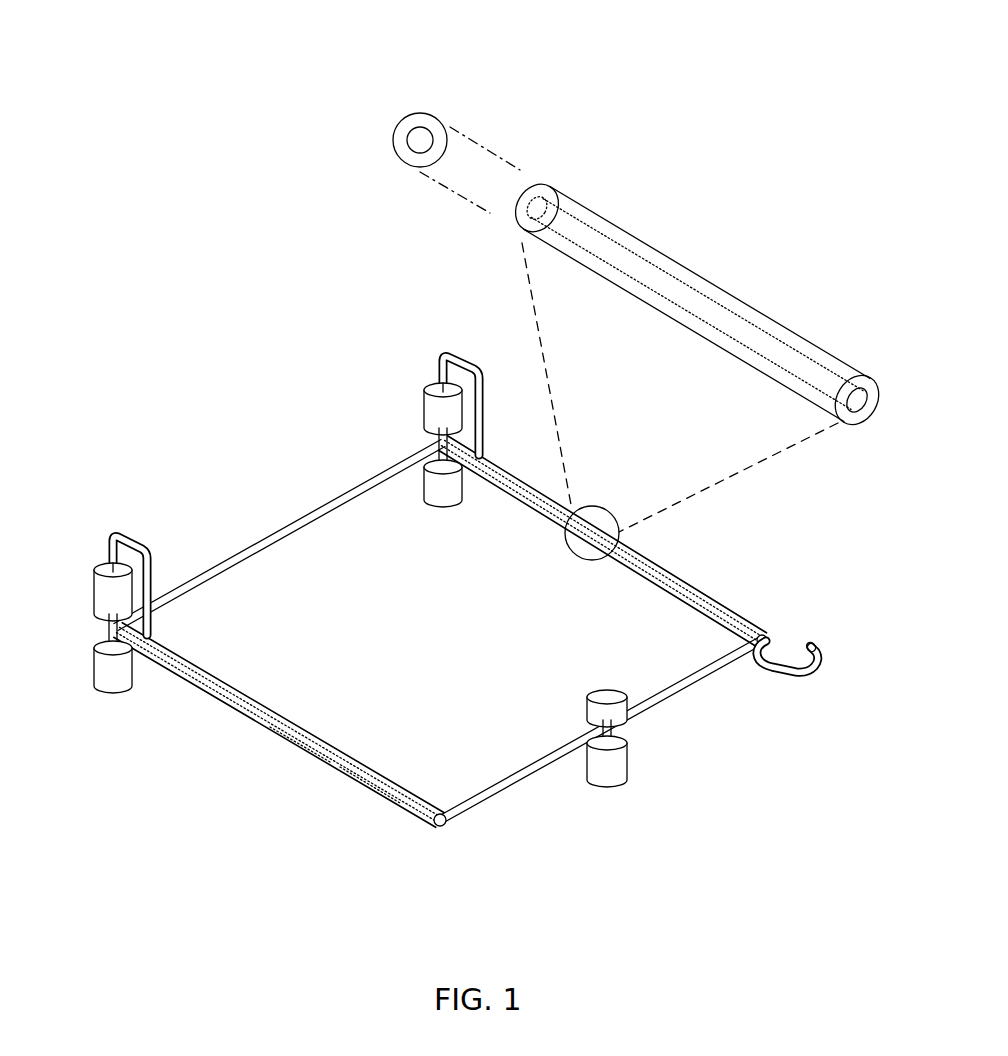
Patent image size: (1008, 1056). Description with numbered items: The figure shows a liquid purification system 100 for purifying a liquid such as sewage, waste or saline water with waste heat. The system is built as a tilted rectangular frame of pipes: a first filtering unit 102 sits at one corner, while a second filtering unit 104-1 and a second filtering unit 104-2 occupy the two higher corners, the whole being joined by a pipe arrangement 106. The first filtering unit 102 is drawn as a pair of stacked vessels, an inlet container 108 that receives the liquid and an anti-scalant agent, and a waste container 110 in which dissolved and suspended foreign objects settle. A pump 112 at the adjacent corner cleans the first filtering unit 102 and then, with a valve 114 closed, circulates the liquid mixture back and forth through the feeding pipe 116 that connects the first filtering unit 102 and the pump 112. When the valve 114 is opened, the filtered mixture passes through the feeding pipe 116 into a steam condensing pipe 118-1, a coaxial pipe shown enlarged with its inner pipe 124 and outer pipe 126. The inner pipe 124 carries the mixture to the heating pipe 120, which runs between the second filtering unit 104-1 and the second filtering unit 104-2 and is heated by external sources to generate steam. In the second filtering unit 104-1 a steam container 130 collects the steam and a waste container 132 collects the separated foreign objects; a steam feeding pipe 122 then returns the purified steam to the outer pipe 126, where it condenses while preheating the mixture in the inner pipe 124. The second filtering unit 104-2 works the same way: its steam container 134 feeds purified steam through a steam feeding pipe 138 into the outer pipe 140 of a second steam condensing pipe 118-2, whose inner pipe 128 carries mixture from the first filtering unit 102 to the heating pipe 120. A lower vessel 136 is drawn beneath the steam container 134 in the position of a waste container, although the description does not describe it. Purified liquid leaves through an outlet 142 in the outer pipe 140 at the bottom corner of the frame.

The liquid purification system 100 is at (218, 98).
The first filtering unit 102 is at (650, 746).
The second filtering unit 104-1 is at (408, 414).
The second filtering unit 104-2 is at (88, 625).
The pipe arrangement 106 is at (160, 627).
The inlet container 108 is at (575, 693).
The waste container 110 is at (623, 783).
The pump 112 is at (806, 634).
The valve 114 is at (746, 594).
The feeding pipe 116 is at (601, 737).
The steam condensing pipe 118-1 is at (537, 381).
The steam condensing pipe 118-2 is at (279, 742).
The heating pipe 120 is at (279, 535).
The steam feeding pipe 122 is at (456, 374).
The inner pipe 124 is at (621, 247).
The outer pipe 126 is at (639, 239).
The inner pipe 128 is at (300, 773).
The steam container 130 is at (417, 378).
The waste container 132 is at (462, 501).
The steam container 134 is at (102, 558).
The lower weight 136 is at (122, 686).
The steam feeding pipe 138 is at (127, 559).
The outer pipe 140 is at (364, 814).
The outlet 142 is at (451, 855).